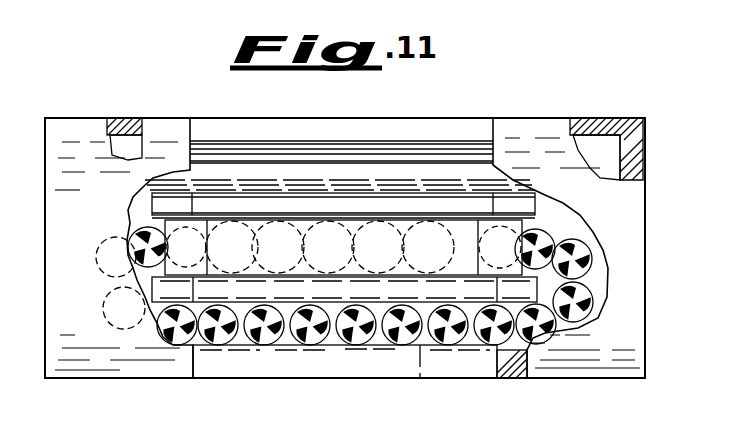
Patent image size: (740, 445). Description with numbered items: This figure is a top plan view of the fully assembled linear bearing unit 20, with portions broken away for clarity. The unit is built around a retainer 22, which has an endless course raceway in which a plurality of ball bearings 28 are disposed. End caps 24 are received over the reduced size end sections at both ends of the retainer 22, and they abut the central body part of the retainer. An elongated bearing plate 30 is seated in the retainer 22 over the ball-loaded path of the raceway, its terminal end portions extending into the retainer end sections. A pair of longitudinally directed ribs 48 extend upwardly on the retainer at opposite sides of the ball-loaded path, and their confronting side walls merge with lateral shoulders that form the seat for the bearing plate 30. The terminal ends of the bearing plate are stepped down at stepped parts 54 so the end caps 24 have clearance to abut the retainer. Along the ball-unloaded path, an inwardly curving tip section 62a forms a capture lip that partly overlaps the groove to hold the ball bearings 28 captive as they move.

The linear bearing unit 20 is at (428, 110).
The retainer 22 is at (355, 134).
The end caps 24 is at (56, 146).
The ball bearings 28 is at (465, 252).
The bearing plate 30 is at (248, 272).
The ribs 48 is at (465, 203).
The stepped parts of the bearing plate 54 is at (198, 226).
The tip section 62a is at (348, 348).